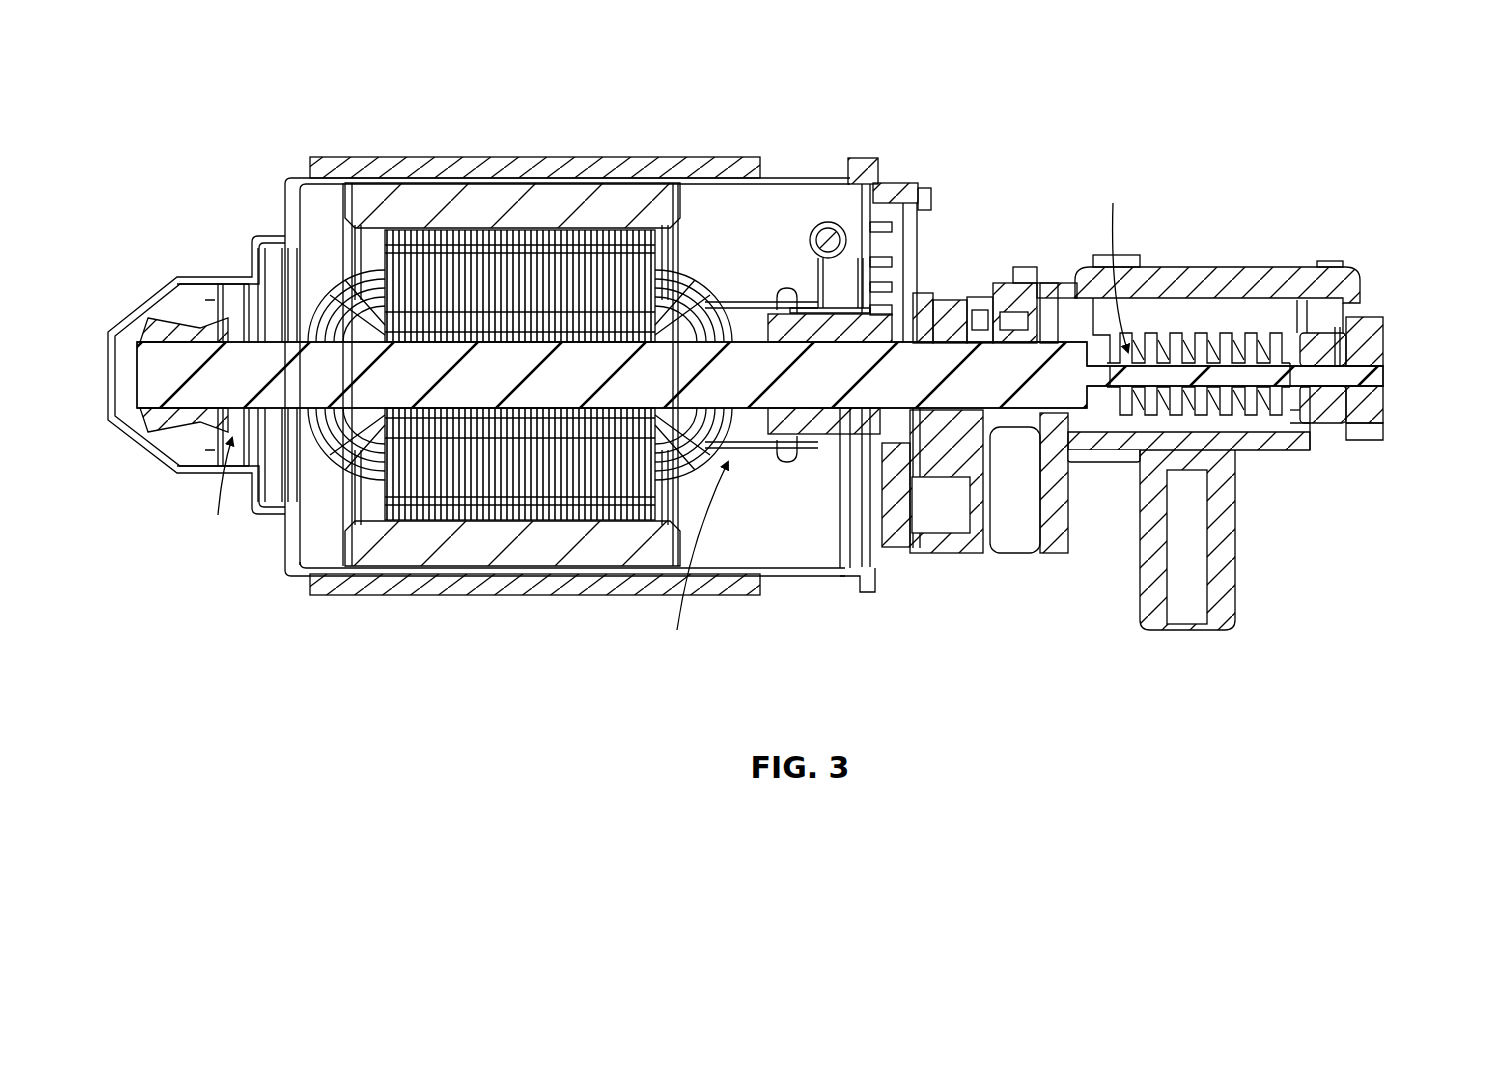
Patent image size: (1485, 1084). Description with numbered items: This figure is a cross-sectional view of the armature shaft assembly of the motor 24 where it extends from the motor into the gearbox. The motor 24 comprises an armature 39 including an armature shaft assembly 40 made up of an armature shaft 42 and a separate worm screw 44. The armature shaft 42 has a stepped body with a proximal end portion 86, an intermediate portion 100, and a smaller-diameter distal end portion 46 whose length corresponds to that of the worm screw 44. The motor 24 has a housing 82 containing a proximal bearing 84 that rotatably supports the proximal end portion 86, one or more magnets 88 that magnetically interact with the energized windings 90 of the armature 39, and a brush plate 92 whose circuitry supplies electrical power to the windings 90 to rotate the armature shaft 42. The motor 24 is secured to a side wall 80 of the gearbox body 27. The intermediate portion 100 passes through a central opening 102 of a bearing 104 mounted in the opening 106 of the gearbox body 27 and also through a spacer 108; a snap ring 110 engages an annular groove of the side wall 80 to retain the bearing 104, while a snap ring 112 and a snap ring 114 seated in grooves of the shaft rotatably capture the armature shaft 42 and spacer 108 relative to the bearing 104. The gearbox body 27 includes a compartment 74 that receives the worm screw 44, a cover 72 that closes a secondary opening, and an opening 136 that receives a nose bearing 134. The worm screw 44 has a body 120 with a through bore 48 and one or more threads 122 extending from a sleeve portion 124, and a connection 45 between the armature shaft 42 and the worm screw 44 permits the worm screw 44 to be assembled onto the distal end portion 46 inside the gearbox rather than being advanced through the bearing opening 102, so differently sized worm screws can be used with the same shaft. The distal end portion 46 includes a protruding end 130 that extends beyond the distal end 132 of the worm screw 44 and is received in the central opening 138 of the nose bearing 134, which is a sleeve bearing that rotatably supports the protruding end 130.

The motor 24 is at (415, 580).
The gearbox body 27 is at (1240, 425).
The armature 39 is at (214, 492).
The armature shaft assembly 40 is at (694, 561).
The armature shaft 42 is at (302, 393).
The worm screw 44 is at (1265, 330).
The connection 45 is at (1113, 262).
The distal end portion 46 is at (1267, 402).
The through bore 48 is at (1235, 452).
The cover 72 is at (1073, 285).
The compartment 74 is at (1225, 290).
The side wall 80 is at (920, 228).
The housing 82 is at (290, 200).
The proximal bearing 84 is at (170, 325).
The proximal end portion 86 is at (208, 400).
The magnets 88 is at (575, 195).
The windings 90 is at (485, 270).
The brush plate 92 is at (860, 287).
The intermediate portion 100 is at (828, 410).
The central opening 102 is at (932, 450).
The bearing 104 is at (937, 307).
The opening 106 is at (912, 418).
The spacer 108 is at (1010, 420).
The snap ring 110 is at (902, 303).
The snap ring 112 is at (873, 420).
The snap ring 114 is at (1047, 412).
The body 120 is at (1150, 350).
The threads 122 is at (1175, 335).
The sleeve portion 124 is at (1195, 456).
The protruding end 130 is at (1355, 375).
The distal end 132 is at (1262, 402).
The nose bearing 134 is at (1320, 402).
The opening 136 is at (1367, 400).
The central opening 138 is at (1310, 338).